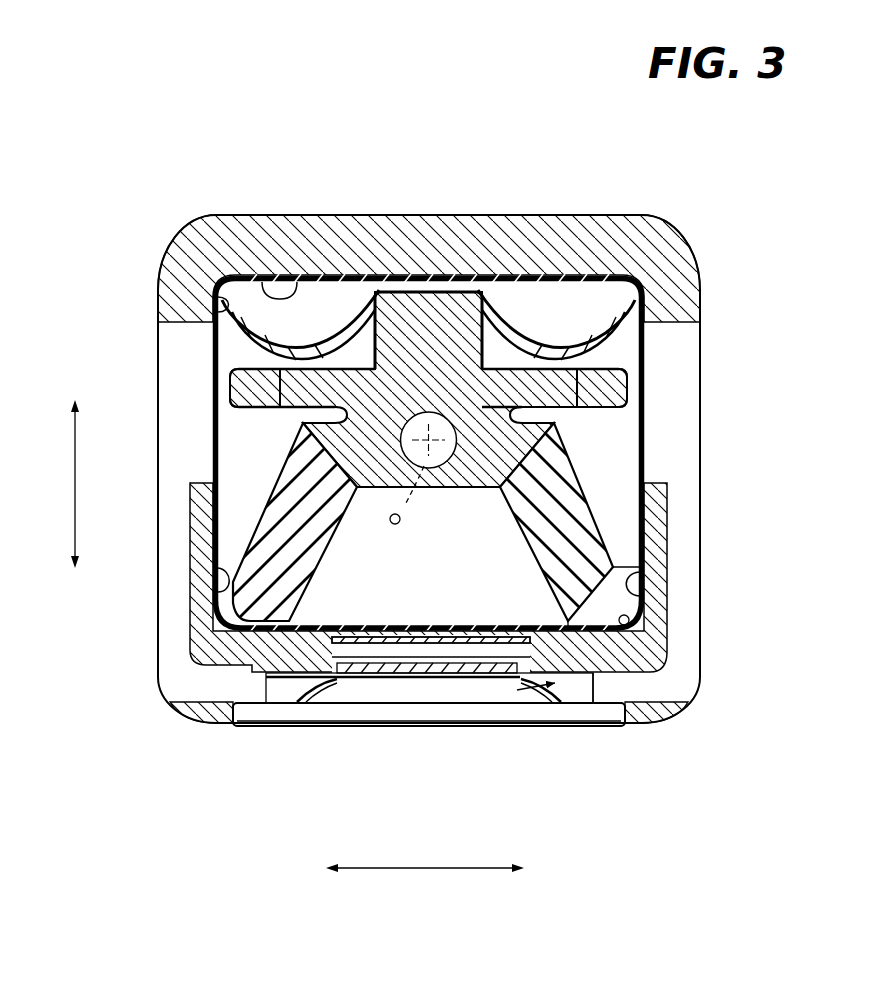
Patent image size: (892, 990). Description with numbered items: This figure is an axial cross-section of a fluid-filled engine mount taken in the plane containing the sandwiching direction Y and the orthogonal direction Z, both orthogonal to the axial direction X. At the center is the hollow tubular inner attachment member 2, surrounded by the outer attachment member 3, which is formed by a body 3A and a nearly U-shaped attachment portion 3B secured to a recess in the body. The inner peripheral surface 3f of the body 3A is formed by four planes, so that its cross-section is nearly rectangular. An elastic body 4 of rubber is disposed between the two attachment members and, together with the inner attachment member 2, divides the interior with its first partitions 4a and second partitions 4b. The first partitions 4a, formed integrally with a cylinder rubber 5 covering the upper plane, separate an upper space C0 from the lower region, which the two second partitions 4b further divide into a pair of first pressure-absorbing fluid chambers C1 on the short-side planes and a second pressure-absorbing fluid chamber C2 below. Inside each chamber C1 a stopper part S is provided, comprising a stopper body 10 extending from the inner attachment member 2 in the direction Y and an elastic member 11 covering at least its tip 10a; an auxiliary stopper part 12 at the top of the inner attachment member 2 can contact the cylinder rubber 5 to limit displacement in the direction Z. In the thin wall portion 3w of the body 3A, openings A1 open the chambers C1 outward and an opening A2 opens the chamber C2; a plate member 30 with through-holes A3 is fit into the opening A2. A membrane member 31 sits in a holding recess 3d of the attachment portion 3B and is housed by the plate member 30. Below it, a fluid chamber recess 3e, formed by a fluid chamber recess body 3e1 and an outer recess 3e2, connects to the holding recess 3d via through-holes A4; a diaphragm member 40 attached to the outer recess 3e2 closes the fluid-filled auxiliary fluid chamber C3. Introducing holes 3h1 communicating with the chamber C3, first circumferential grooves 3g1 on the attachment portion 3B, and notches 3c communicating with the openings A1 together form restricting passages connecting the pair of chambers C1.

The inner attachment member 2 is at (485, 455).
The outer attachment member 3 is at (160, 222).
The body 3A is at (688, 225).
The attachment portion 3B is at (703, 355).
The notch 3c is at (195, 484).
The holding recess 3d is at (292, 676).
The fluid chamber recess 3e is at (606, 805).
The fluid chamber recess body 3e1 is at (553, 703).
The outer recess 3e2 is at (597, 703).
The inner peripheral surface 3f is at (262, 282).
The first circumferential groove 3g1 is at (175, 585).
The introducing hole 3h1 is at (190, 702).
The thin wall portion 3w is at (262, 640).
The elastic body 4 is at (292, 466).
The first partition 4a is at (333, 300).
The second partition 4b is at (318, 527).
The cylinder rubber 5 is at (598, 277).
The stopper body 10 is at (286, 402).
The tip 10a is at (262, 372).
The elastic member 11 is at (240, 390).
The auxiliary stopper part 12 is at (418, 300).
The plate member 30 is at (535, 630).
The membrane member 31 is at (405, 650).
The diaphragm member 40 is at (409, 712).
The stopper part S is at (210, 388).
The opening A1 is at (229, 384).
The opening A2 is at (292, 585).
The through-hole A3 is at (356, 637).
The through-hole A4 is at (352, 676).
The space C0 is at (527, 300).
The first pressure-absorbing fluid chamber C1 is at (213, 442).
The second pressure-absorbing fluid chamber C2 is at (459, 590).
The auxiliary fluid chamber C3 is at (517, 690).
The axial direction X is at (413, 498).
The sandwiching direction Y is at (425, 880).
The orthogonal direction Z is at (67, 484).